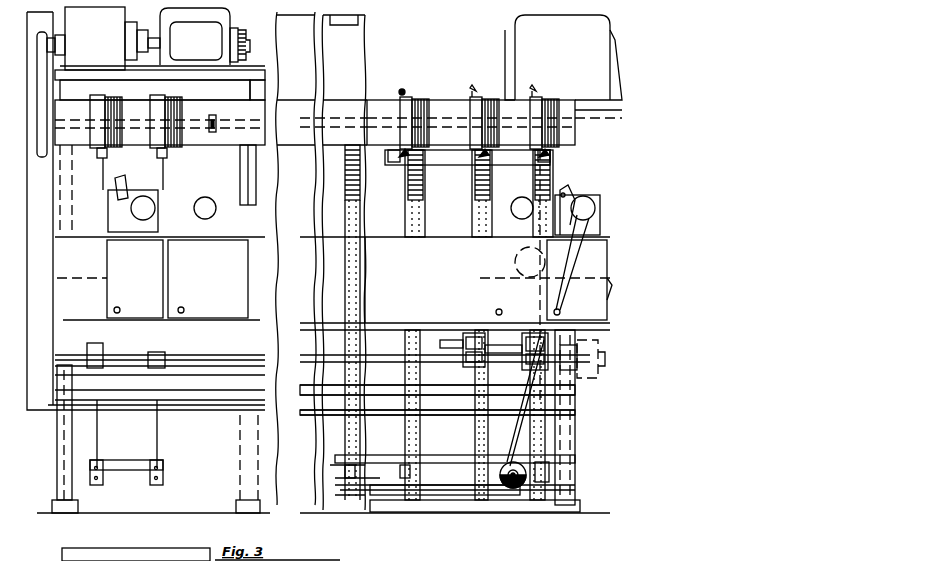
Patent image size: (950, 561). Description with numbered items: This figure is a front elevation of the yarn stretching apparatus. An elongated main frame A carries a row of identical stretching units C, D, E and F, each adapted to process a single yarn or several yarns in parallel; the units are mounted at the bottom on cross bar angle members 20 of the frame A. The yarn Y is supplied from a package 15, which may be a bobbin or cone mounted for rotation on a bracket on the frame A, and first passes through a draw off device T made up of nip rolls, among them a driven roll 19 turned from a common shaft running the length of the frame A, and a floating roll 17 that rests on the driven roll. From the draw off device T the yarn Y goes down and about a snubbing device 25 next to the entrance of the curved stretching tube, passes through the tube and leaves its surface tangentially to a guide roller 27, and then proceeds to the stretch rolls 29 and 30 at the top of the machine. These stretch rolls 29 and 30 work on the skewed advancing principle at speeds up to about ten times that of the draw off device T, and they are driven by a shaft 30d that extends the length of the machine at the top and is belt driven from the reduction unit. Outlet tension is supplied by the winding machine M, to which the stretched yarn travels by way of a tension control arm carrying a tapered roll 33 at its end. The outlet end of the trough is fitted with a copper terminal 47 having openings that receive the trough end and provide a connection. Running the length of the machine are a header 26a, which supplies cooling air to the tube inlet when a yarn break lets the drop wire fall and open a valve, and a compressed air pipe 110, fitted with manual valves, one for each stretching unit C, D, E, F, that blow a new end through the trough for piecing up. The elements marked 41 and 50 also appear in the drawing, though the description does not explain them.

The shaft 30d is at (200, 135).
The stretch roll 30 is at (570, 88).
The stretch roll 29 is at (572, 155).
The guide roller 27 is at (552, 158).
The bracket 41 is at (396, 156).
The copper terminal 47 is at (498, 156).
The stretching unit F is at (345, 185).
The stretching unit E is at (405, 185).
The stretching unit D is at (472, 185).
The stretching unit C is at (533, 185).
The winding machine M is at (580, 200).
The tapered roll 33 is at (582, 290).
The nip roll 17 is at (522, 348).
The draw off device T is at (556, 336).
The nip roll 19 is at (518, 365).
The header 26a is at (433, 392).
The compressed air pipe 110 is at (438, 418).
The cross bar angle member 20 is at (445, 462).
The yarn Y is at (520, 433).
The pulley 50 is at (500, 465).
The main frame A is at (567, 448).
The snubbing device 25 is at (549, 478).
The package 15 is at (500, 485).